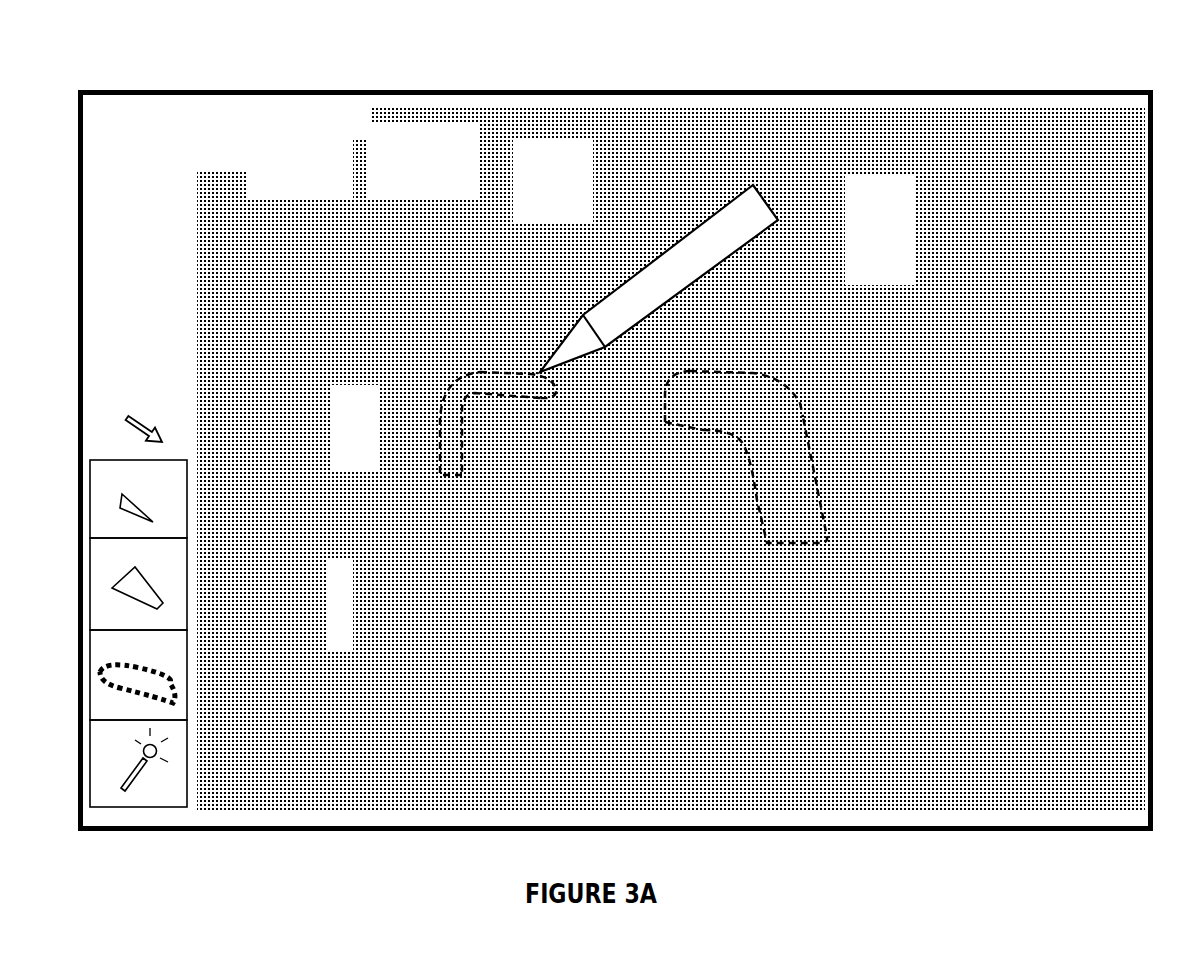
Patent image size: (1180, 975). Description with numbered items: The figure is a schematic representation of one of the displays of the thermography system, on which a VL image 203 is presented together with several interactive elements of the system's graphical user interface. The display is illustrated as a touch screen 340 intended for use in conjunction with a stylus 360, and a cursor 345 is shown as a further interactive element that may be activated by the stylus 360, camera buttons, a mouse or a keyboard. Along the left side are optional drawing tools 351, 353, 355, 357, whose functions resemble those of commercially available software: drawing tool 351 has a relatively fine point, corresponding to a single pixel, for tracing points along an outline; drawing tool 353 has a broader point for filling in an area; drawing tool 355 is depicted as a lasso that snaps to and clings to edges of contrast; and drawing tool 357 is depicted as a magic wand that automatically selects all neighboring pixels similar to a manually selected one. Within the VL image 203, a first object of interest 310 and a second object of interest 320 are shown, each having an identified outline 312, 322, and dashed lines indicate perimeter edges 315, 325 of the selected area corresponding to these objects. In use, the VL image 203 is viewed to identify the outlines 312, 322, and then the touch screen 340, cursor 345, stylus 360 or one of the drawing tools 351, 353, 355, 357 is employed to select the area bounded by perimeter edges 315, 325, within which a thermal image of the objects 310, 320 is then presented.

The VL image 203 is at (535, 134).
The touch screen 340 is at (225, 169).
The cursor 345 is at (139, 409).
The drawing tool 351 is at (99, 502).
The drawing tool 353 is at (109, 566).
The drawing tool 355 is at (99, 651).
The drawing tool 357 is at (109, 756).
The first object of interest 310 is at (442, 445).
The outline 312 is at (500, 385).
The perimeter edge 315 is at (522, 397).
The second object of interest 320 is at (707, 395).
The outline 322 is at (728, 370).
The perimeter edge 325 is at (795, 382).
The stylus 360 is at (623, 297).